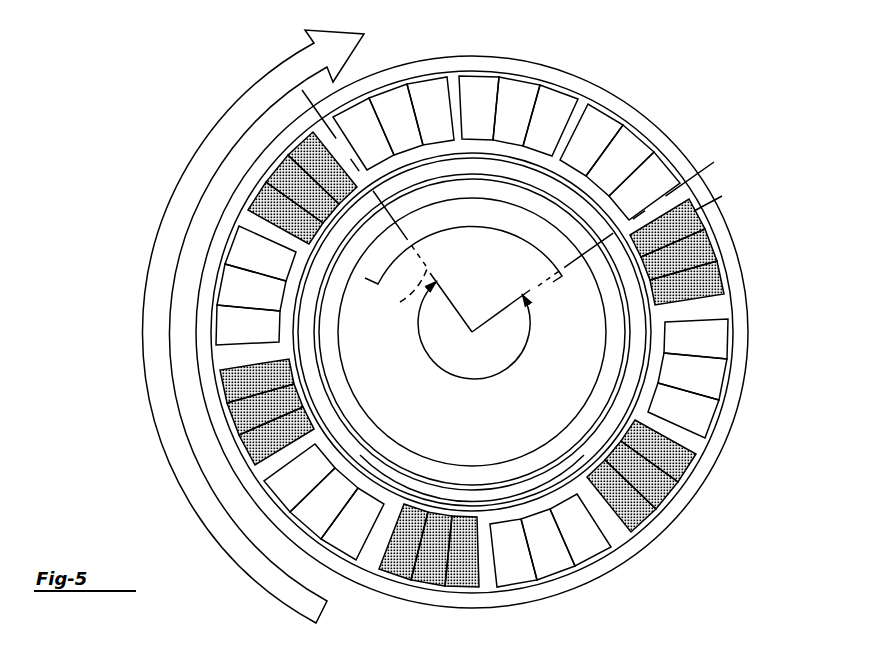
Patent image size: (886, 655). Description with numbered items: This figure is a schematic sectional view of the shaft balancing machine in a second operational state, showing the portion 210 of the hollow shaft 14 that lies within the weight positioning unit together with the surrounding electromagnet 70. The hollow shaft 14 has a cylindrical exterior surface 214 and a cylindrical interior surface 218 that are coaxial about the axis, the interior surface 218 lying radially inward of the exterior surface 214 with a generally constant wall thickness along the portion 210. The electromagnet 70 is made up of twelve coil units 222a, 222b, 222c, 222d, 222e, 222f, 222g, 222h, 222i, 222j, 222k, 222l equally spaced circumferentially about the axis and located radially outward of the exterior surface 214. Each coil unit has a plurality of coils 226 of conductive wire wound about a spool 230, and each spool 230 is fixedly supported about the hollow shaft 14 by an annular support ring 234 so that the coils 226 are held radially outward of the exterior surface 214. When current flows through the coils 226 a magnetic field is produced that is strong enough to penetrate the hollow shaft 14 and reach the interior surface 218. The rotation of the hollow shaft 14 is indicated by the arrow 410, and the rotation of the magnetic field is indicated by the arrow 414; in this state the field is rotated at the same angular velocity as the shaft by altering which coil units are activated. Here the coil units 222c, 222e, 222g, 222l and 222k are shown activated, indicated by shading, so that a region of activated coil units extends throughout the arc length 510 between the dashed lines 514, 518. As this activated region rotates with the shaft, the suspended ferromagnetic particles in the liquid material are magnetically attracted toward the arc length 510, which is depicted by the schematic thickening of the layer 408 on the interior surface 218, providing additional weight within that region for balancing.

The hollow shaft 14 is at (310, 375).
The electromagnet 70 is at (512, 307).
The portion of the hollow shaft 210 is at (427, 492).
The cylindrical exterior surface 214 is at (563, 475).
The cylindrical interior surface 218 is at (485, 487).
The coil unit 222a is at (546, 56).
The coil unit 222b is at (666, 126).
The coil unit 222c is at (742, 231).
The coil unit 222d is at (749, 388).
The coil unit 222e is at (692, 517).
The coil unit 222f is at (580, 603).
The coil unit 222g is at (406, 606).
The coil unit 222h is at (290, 528).
The coil unit 222i is at (207, 430).
The coil unit 222j is at (197, 283).
The coil unit 222k is at (262, 147).
The coil unit 222l is at (380, 68).
The coils 226 is at (694, 211).
The spool 230 is at (634, 132).
The annular support ring 234 is at (748, 300).
The layer 408 is at (387, 438).
The arrow indicating rotation of the hollow shaft 410 is at (483, 228).
The arrow indicating rotation of the magnetic field 414 is at (183, 187).
The arc length 510 is at (503, 372).
The dashed line 514 is at (405, 300).
The dashed line 518 is at (550, 305).